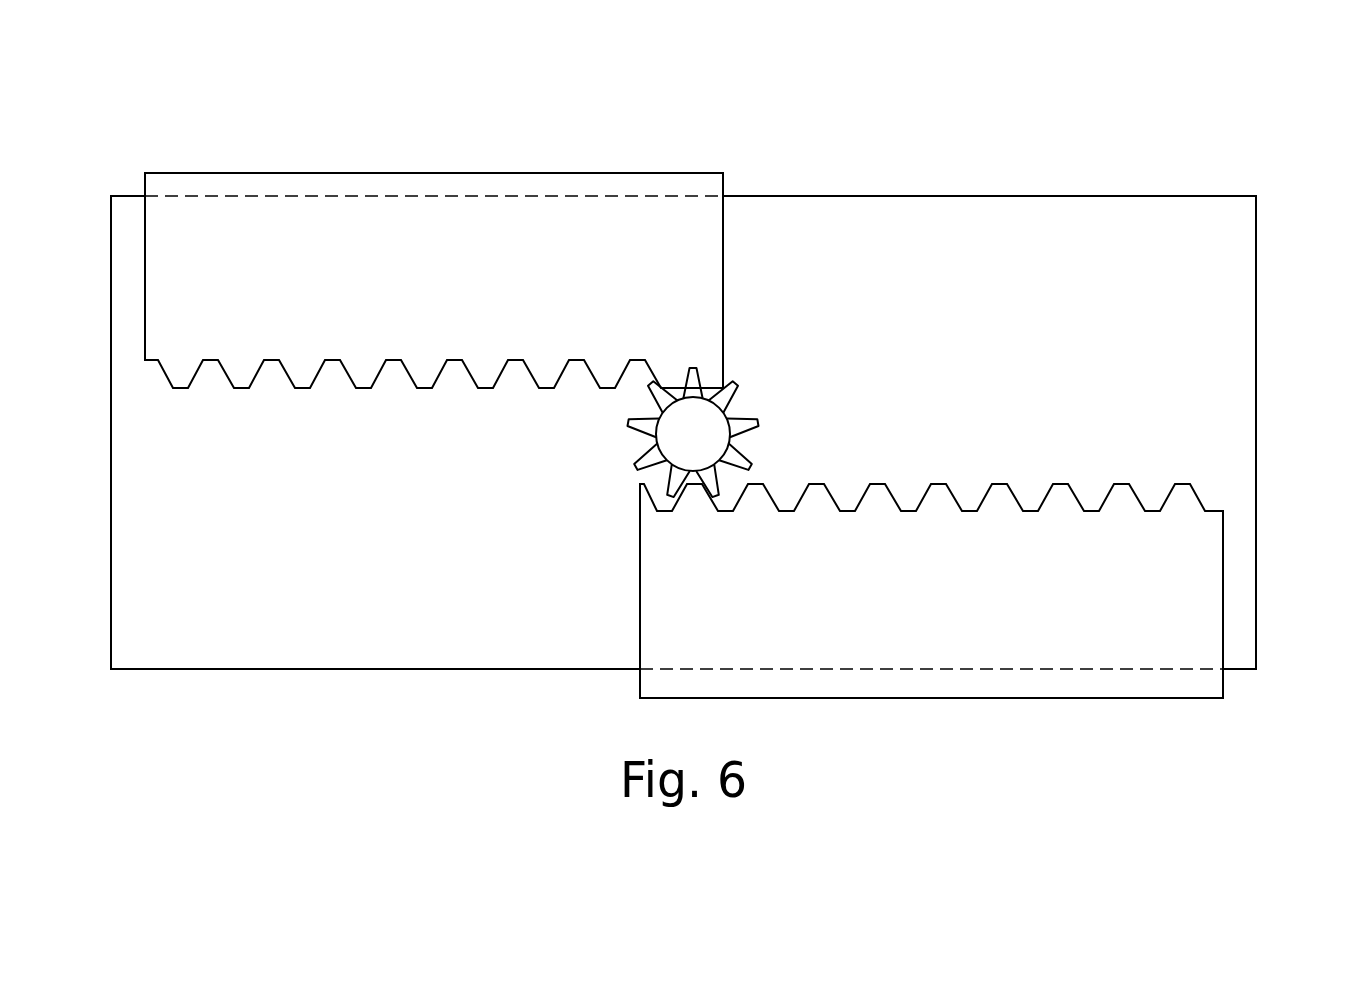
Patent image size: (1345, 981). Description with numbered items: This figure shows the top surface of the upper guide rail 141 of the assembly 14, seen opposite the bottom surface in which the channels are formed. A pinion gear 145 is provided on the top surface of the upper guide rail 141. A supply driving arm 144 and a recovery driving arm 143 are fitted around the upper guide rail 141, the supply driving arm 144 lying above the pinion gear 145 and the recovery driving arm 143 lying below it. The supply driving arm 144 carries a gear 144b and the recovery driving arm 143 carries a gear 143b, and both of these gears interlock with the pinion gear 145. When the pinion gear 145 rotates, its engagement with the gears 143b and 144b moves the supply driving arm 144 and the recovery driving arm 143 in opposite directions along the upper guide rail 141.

The clamping device 14 is at (1174, 158).
The upper guide rail 141 is at (980, 235).
The recovery driving arm 143 is at (943, 630).
The gear 143b is at (1151, 508).
The supply driving arm 144 is at (420, 238).
The gear 144b is at (181, 380).
The pinion gear 145 is at (672, 437).